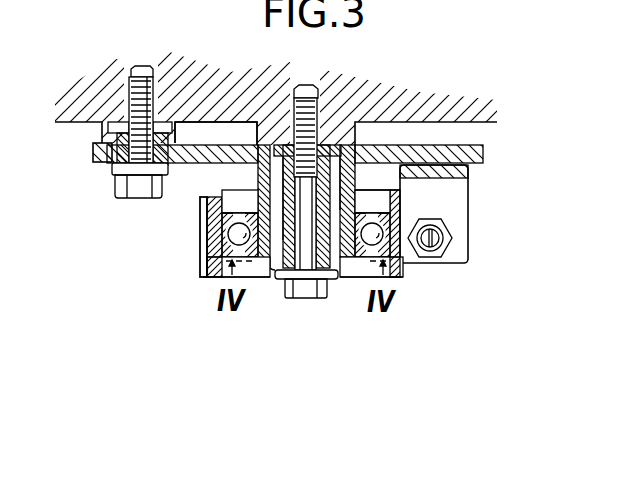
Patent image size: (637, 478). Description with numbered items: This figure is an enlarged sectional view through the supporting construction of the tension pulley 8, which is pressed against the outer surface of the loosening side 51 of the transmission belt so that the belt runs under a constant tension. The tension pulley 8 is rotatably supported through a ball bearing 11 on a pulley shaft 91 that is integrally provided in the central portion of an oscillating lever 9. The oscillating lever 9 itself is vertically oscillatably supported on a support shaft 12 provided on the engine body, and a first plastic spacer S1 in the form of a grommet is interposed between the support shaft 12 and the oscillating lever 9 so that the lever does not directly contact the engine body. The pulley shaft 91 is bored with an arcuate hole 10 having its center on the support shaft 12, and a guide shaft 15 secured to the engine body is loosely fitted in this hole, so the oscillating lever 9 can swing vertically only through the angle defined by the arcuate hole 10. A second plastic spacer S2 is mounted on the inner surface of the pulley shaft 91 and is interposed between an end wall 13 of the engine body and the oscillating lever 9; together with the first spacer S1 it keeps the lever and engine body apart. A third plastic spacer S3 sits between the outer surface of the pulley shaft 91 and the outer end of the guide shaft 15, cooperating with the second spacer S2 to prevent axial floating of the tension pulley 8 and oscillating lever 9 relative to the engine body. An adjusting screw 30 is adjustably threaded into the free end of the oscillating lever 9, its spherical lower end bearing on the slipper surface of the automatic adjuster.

The end wall 13 is at (417, 119).
The second plastic spacer S2 is at (258, 144).
The oscillating lever 9 is at (189, 158).
The first plastic spacer S1 is at (107, 165).
The support shaft 12 is at (140, 192).
The pulley shaft 91 is at (258, 177).
The guide shaft 15 is at (303, 299).
The tension pulley 8 is at (399, 263).
The arcuate hole 10 is at (329, 268).
The ball bearing 11 is at (229, 231).
The loosening side 51 is at (200, 258).
The third plastic spacer S3 is at (272, 265).
The adjusting screw 30 is at (452, 238).